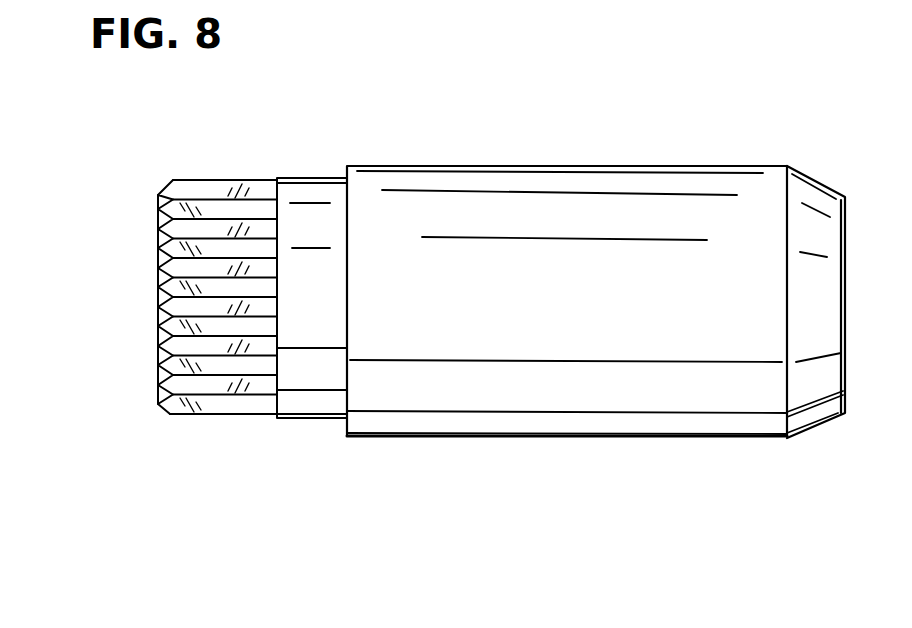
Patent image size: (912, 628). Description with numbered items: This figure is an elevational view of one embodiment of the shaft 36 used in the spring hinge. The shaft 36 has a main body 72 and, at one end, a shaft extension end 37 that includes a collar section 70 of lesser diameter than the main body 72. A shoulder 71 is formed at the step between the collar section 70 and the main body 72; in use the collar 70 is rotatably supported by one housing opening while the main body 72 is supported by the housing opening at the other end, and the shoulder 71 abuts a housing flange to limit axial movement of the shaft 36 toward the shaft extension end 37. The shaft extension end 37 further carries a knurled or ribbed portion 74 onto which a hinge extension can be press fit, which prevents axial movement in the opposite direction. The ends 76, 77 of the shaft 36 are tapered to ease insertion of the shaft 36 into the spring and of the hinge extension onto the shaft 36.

The shaft 36 is at (641, 135).
The shaft extension end 37 is at (286, 180).
The collar section 70 is at (318, 190).
The shoulder 71 is at (348, 432).
The main body 72 is at (462, 174).
The knurled or ribbed portion 74 is at (188, 180).
The end of shaft 76 is at (820, 183).
The end of shaft 77 is at (167, 193).